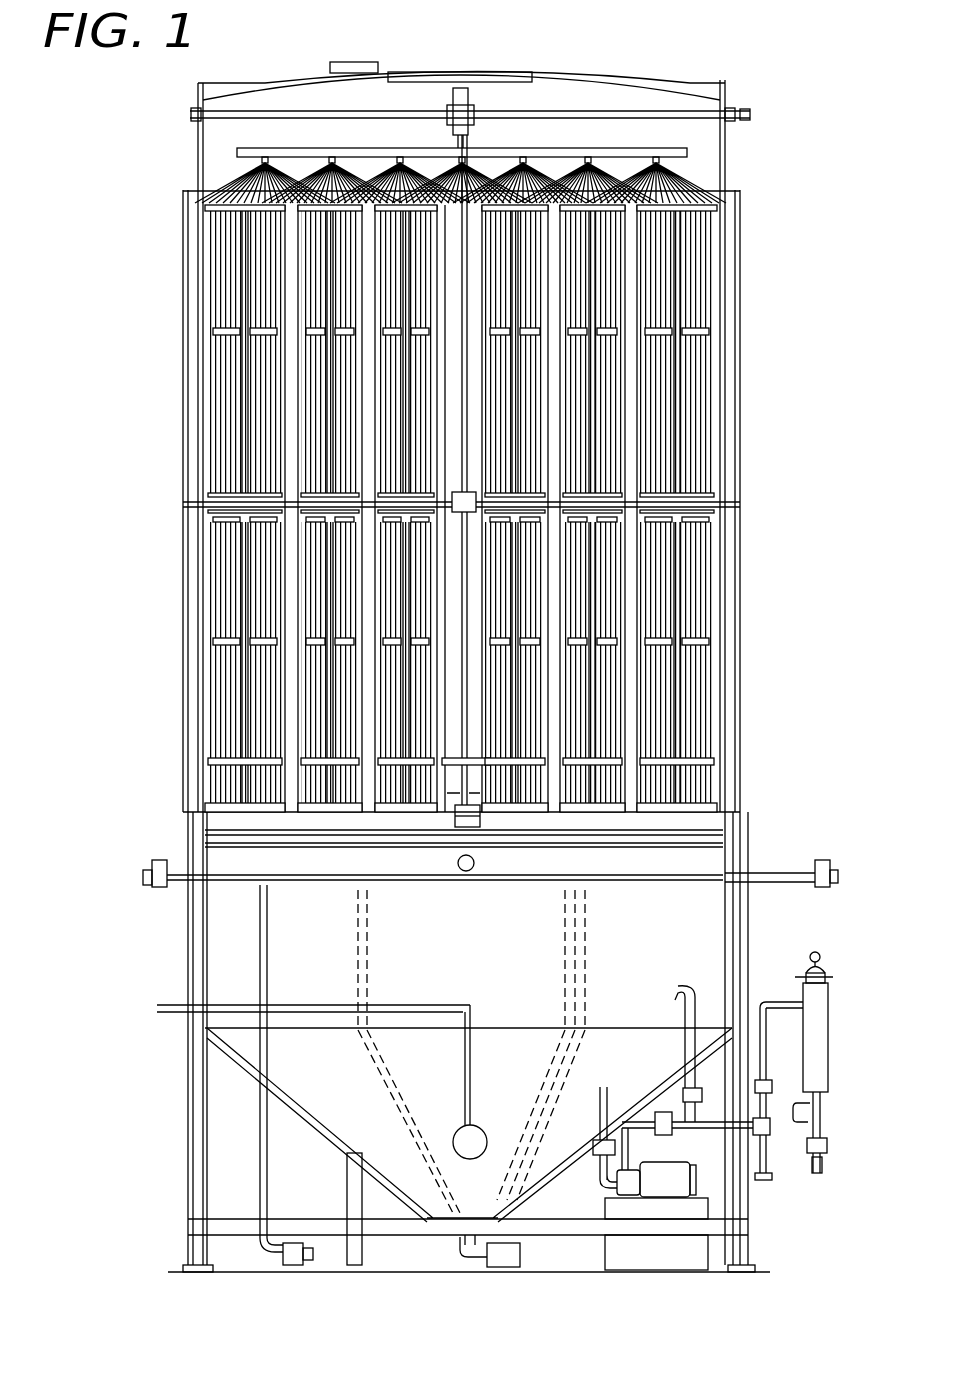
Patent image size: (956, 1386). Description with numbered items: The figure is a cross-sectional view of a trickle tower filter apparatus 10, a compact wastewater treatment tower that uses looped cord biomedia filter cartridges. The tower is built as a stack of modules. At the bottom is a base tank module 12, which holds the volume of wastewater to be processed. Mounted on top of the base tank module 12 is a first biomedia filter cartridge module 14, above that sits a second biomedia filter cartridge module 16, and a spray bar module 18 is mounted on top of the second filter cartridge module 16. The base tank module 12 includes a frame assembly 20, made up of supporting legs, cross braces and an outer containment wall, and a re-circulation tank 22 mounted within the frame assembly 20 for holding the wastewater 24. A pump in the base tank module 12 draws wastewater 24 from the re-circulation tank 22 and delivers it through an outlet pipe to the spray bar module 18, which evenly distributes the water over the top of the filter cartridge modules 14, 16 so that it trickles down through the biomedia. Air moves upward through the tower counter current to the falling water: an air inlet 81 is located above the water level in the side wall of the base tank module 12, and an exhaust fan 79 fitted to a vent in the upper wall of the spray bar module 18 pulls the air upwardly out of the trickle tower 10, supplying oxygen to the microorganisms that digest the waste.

The trickle tower filter apparatus 10 is at (750, 69).
The base tank module 12 is at (105, 818).
The first biomedia filter cartridge module 14 is at (103, 500).
The second biomedia filter cartridge module 16 is at (101, 190).
The spray bar module 18 is at (135, 190).
The frame assembly 20 is at (181, 1141).
The re-circulation tank 22 is at (309, 1137).
The wastewater 24 is at (655, 948).
The exhaust fan 79 is at (353, 62).
The air inlet 81 is at (476, 861).